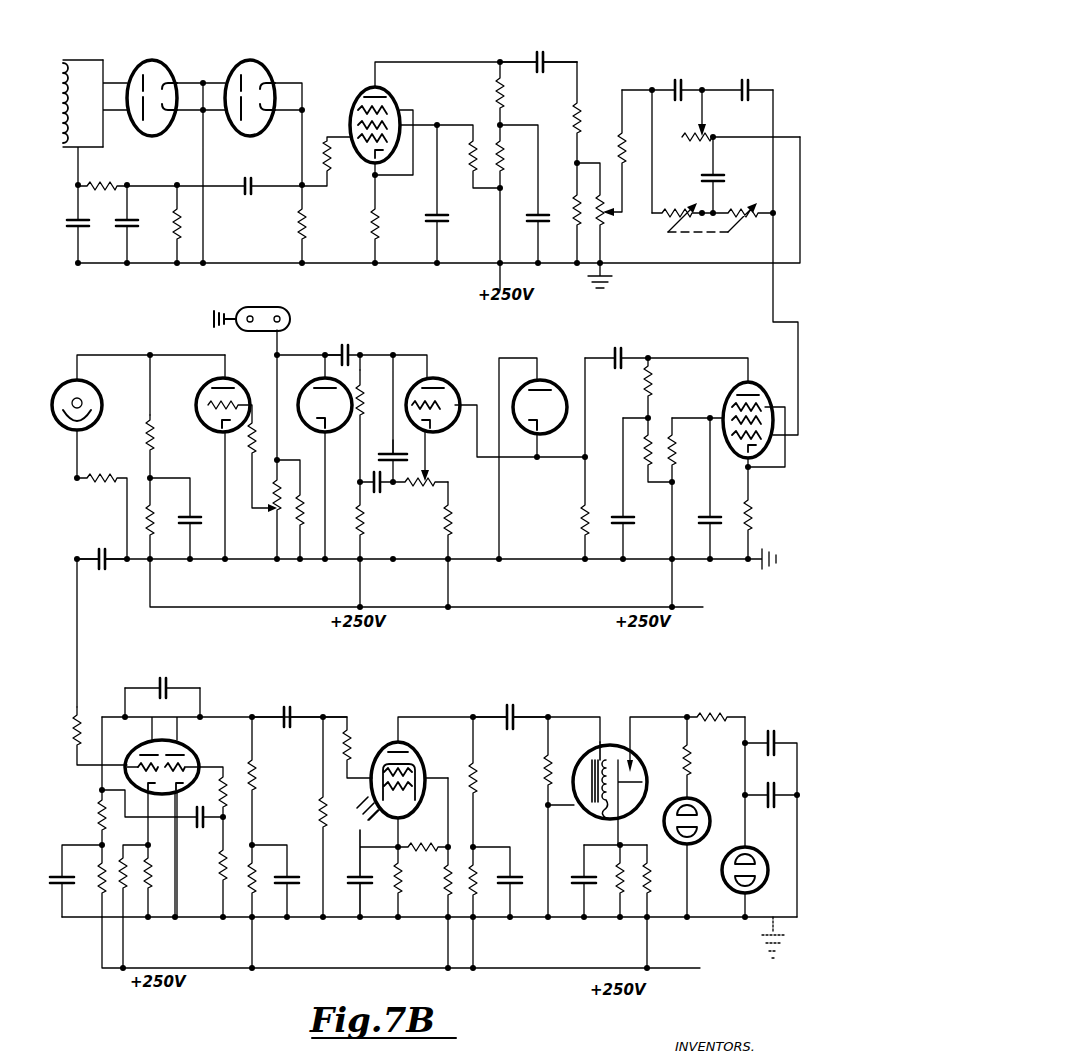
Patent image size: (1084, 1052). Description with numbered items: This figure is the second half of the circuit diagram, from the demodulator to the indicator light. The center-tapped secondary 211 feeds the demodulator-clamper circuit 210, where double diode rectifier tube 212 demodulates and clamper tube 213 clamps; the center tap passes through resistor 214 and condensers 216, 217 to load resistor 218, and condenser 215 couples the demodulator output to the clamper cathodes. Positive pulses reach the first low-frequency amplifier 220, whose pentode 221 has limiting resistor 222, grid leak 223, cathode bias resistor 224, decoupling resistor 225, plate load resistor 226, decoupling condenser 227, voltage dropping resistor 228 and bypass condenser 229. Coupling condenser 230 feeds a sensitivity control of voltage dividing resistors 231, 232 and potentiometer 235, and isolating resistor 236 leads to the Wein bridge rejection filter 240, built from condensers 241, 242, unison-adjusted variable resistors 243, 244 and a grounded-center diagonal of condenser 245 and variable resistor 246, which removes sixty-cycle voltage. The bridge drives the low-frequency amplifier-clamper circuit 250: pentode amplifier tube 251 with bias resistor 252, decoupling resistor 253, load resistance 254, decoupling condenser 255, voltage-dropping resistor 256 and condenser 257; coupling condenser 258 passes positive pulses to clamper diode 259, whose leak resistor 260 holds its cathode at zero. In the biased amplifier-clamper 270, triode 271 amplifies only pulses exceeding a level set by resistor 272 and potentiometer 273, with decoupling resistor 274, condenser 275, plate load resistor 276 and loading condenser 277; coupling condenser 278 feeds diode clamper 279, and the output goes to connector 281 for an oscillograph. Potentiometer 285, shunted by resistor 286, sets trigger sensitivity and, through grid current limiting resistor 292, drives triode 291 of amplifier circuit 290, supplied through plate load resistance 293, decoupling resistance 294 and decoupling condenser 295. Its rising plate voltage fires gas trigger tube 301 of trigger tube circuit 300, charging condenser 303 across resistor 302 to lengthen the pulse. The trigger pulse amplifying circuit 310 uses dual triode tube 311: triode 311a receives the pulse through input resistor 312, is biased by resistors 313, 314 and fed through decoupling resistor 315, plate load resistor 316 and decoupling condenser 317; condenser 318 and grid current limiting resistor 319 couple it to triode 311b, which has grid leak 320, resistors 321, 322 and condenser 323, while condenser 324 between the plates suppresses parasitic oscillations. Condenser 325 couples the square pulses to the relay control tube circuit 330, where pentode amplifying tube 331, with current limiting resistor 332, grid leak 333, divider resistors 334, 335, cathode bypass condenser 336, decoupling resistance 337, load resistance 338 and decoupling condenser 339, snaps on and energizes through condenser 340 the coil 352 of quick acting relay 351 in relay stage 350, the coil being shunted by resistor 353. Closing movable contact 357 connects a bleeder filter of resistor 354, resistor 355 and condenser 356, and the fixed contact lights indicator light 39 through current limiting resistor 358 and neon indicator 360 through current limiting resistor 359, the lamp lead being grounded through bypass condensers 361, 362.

The demodulator-clamper circuit 210 is at (215, 57).
The center-tapped secondary 211 is at (53, 79).
The double diode rectifier tube 212 is at (152, 61).
The clamper tube 213 is at (276, 73).
The resistor 214 is at (130, 165).
The condenser 215 is at (256, 177).
The condenser 216 is at (64, 226).
The condenser 217 is at (120, 231).
The load resistor 218 is at (173, 215).
The first low-frequency amplifier 220 is at (474, 55).
The pentode 221 is at (354, 99).
The limiting resistor 222 is at (335, 166).
The grid leak 223 is at (295, 222).
The cathode bias resistor 224 is at (365, 222).
The decoupling resistor 225 is at (502, 160).
The plate load resistor 226 is at (494, 89).
The decoupling condenser 227 is at (528, 224).
The voltage dropping resistor 228 is at (467, 170).
The condenser 229 is at (448, 222).
The coupling condenser 230 is at (548, 58).
The voltage dividing resistor 231 is at (573, 112).
The voltage dividing resistor 232 is at (570, 177).
The potentiometer 235 is at (602, 222).
The isolating resistor 236 is at (614, 92).
The Wein bridge rejection filter 240 is at (721, 55).
The condenser 241 is at (680, 75).
The condenser 242 is at (748, 75).
The variable resistor 243 is at (660, 228).
The variable resistor 244 is at (738, 228).
The condenser 245 is at (725, 174).
The variable resistor 246 is at (686, 138).
The low-frequency amplifier-clamper circuit 250 is at (664, 332).
The pentode amplifier tube 251 is at (758, 377).
The bias resistor 252 is at (756, 514).
The decoupling resistor 253 is at (646, 468).
The load resistance 254 is at (653, 380).
The decoupling condenser 255 is at (650, 528).
The voltage-dropping resistor 256 is at (674, 430).
The condenser 257 is at (722, 522).
The coupling condenser 258 is at (615, 363).
The clamper diode 259 is at (542, 378).
The resistor 260 is at (577, 520).
The biased amplifier-clamper 270 is at (396, 330).
The triode 271 is at (441, 372).
The resistor 272 is at (454, 516).
The potentiometer 273 is at (428, 474).
The plate circuit decoupling resistor 274 is at (356, 527).
The condenser 275 is at (376, 518).
The plate load resistor 276 is at (358, 426).
The condenser 277 is at (385, 452).
The coupling condenser 278 is at (338, 336).
The diode clamper 279 is at (308, 386).
The connector 281 is at (274, 304).
The potentiometer 285 is at (265, 520).
The resistor 286 is at (297, 475).
The amplifier circuit 290 is at (196, 336).
The triode 291 is at (204, 377).
The grid current limiting resistor 292 is at (244, 402).
The plate load resistance 293 is at (160, 420).
The decoupling resistance 294 is at (152, 522).
The decoupling condenser 295 is at (199, 484).
The trigger tube circuit 300 is at (81, 335).
The gas trigger tube 301 is at (60, 372).
The resistor 302 is at (88, 481).
The condenser 303 is at (102, 563).
The trigger pulse amplifying circuit 310 is at (166, 662).
The dual triode tube 311 is at (162, 740).
The triode 311a is at (144, 752).
The triode 311b is at (190, 756).
The grid current limiting input resistor 312 is at (70, 736).
The resistor 313 is at (152, 914).
The cathode bias bleeder 314 is at (120, 856).
The decoupling resistor 315 is at (98, 887).
The plate load resistor 316 is at (96, 812).
The decoupling condenser 317 is at (58, 874).
The condenser 318 is at (213, 822).
The grid current limiting resistor 319 is at (220, 776).
The grid leak 320 is at (221, 881).
The resistor 321 is at (254, 868).
The resistor 322 is at (256, 780).
The condenser 323 is at (288, 886).
The condenser 324 is at (184, 688).
The condenser 325 is at (290, 704).
The relay control tube circuit 330 is at (424, 684).
The pentode amplifying tube 331 is at (420, 759).
The current limiting resistor 332 is at (349, 745).
The grid leak 333 is at (312, 806).
The resistor 334 is at (423, 847).
The resistor 335 is at (444, 878).
The condenser 336 is at (360, 820).
The decoupling resistance 337 is at (508, 885).
The load resistance 338 is at (478, 777).
The decoupling condenser 339 is at (482, 860).
The condenser 340 is at (518, 698).
The relay stage 350 is at (621, 682).
The quick acting relay 351 is at (620, 730).
The coil 352 is at (604, 812).
The resistor 353 is at (542, 788).
The resistor 354 is at (655, 839).
The resistor 355 is at (616, 875).
The condenser 356 is at (582, 886).
The movable contact 357 is at (642, 771).
The current limiting resistor 358 is at (702, 710).
The current limiting resistor 359 is at (697, 760).
The neon indicator 360 is at (706, 808).
The bypass condenser 361 is at (790, 722).
The bypass condenser 362 is at (780, 776).
The indicator light 39 is at (768, 883).